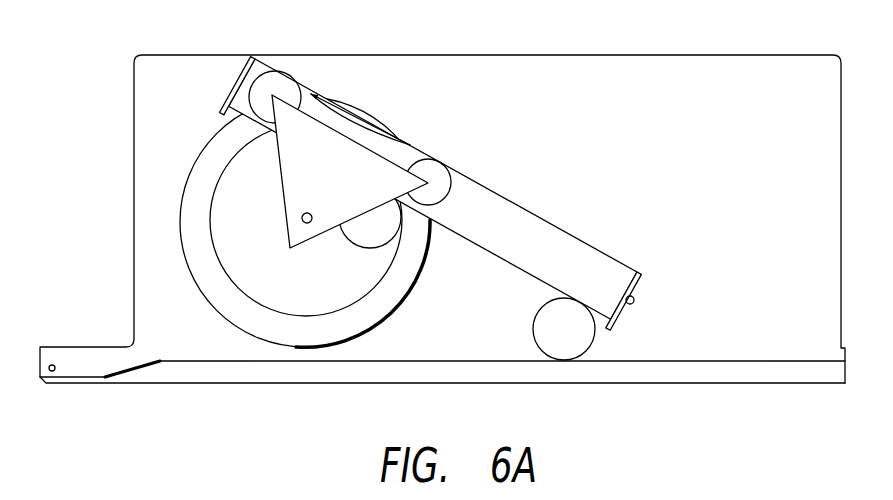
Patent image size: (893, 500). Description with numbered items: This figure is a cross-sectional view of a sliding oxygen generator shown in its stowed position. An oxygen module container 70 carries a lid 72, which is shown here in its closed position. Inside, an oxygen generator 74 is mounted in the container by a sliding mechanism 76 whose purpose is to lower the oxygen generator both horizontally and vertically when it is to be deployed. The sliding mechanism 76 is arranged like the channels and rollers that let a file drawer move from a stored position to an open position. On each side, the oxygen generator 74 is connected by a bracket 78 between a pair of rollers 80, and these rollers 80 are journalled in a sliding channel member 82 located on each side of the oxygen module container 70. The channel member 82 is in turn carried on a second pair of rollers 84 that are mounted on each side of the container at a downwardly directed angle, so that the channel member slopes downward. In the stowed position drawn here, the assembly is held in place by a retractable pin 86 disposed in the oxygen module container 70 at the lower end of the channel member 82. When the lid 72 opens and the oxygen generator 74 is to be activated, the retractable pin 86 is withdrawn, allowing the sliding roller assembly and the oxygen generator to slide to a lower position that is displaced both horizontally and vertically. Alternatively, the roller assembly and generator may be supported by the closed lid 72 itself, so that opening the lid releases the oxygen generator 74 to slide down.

The oxygen module container 70 is at (134, 276).
The lid 72 is at (248, 372).
The oxygen generator 74 is at (366, 277).
The sliding mechanism 76 is at (578, 212).
The bracket 78 is at (293, 182).
The pair of rollers 80 is at (288, 93).
The sliding channel member 82 is at (600, 277).
The pair of rollers 84 is at (380, 223).
The retractable pin 86 is at (635, 303).